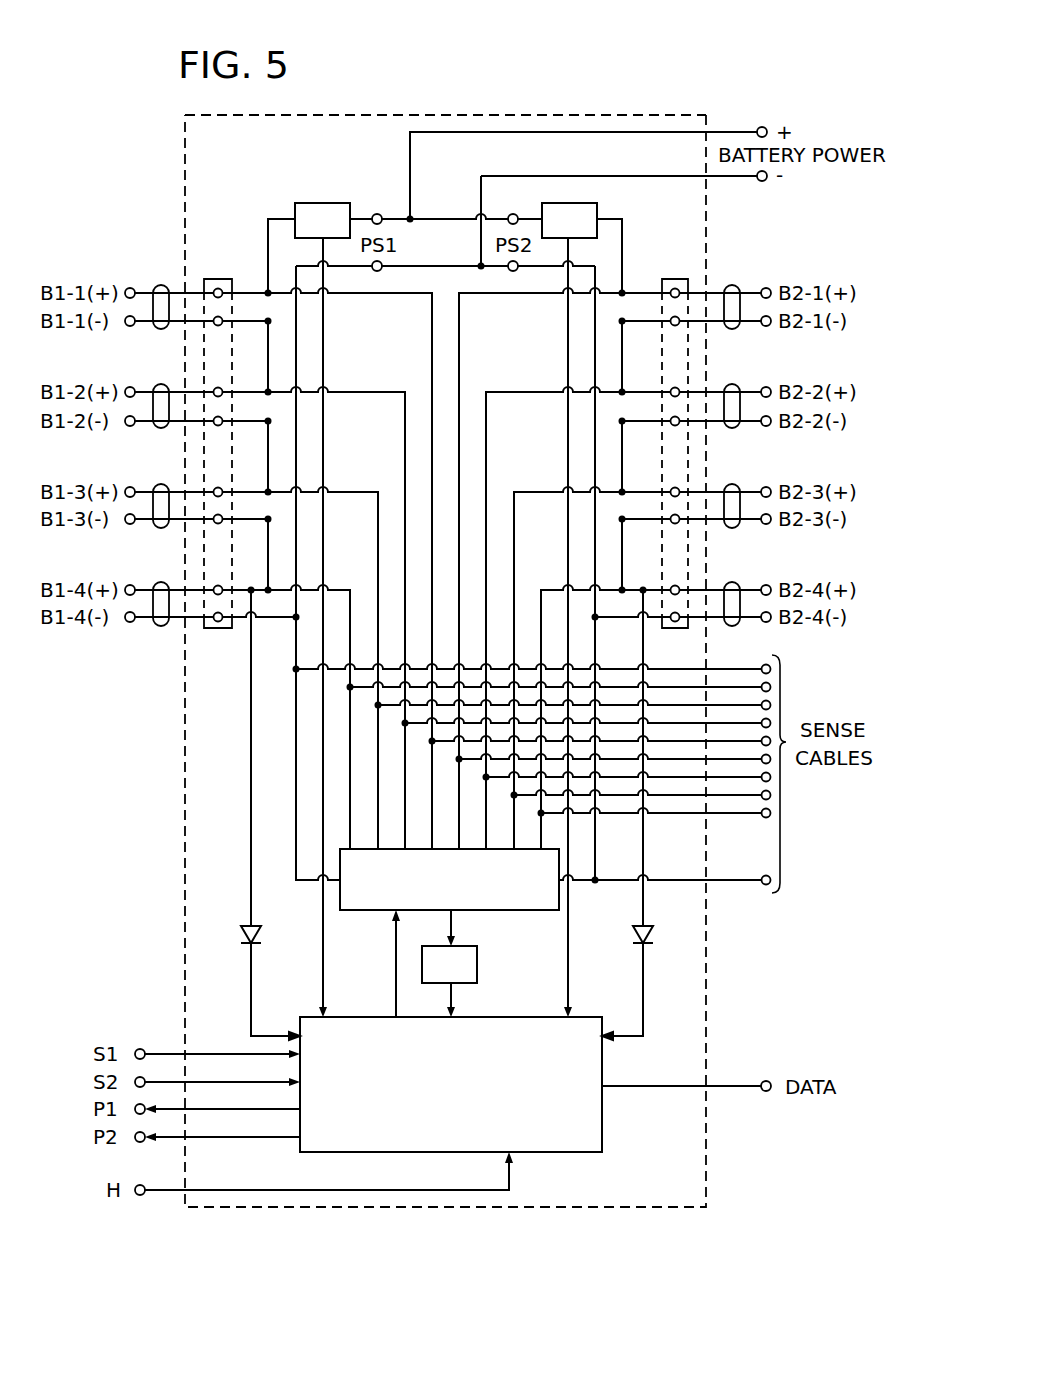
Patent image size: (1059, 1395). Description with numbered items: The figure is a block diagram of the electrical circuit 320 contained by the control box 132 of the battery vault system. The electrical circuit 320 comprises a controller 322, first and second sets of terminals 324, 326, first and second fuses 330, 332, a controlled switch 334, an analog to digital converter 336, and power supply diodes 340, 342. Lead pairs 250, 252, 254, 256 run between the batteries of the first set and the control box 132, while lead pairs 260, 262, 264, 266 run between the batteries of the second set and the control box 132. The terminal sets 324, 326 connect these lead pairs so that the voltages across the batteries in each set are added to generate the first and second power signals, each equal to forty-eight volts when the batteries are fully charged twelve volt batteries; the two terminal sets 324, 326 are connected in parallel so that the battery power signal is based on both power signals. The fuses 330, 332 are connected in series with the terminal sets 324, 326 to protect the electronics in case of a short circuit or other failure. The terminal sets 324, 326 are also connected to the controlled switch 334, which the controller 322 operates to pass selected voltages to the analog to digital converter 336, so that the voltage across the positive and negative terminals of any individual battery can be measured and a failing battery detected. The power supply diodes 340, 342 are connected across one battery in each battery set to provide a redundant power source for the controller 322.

The control box 132 is at (597, 112).
The electrical circuit 320 is at (682, 1163).
The first fuse 330 is at (310, 202).
The second fuse 332 is at (582, 203).
The first set of terminals 324 is at (216, 277).
The second set of terminals 326 is at (677, 277).
The lead pair 250 is at (160, 284).
The lead pair 252 is at (160, 383).
The lead pair 254 is at (160, 483).
The lead pair 256 is at (160, 581).
The lead pair 260 is at (733, 284).
The lead pair 262 is at (733, 383).
The lead pair 264 is at (733, 483).
The lead pair 266 is at (733, 581).
The power supply diode 340 is at (236, 936).
The power supply diode 342 is at (664, 937).
The controlled switch 334 is at (497, 912).
The analog to digital converter 336 is at (477, 965).
The controller 322 is at (545, 1155).